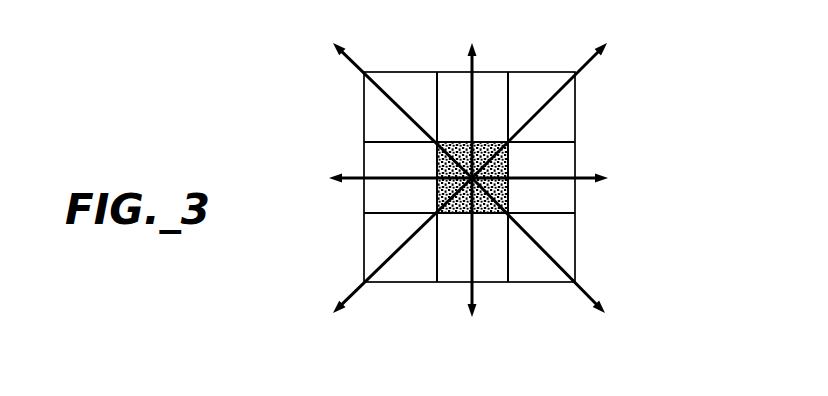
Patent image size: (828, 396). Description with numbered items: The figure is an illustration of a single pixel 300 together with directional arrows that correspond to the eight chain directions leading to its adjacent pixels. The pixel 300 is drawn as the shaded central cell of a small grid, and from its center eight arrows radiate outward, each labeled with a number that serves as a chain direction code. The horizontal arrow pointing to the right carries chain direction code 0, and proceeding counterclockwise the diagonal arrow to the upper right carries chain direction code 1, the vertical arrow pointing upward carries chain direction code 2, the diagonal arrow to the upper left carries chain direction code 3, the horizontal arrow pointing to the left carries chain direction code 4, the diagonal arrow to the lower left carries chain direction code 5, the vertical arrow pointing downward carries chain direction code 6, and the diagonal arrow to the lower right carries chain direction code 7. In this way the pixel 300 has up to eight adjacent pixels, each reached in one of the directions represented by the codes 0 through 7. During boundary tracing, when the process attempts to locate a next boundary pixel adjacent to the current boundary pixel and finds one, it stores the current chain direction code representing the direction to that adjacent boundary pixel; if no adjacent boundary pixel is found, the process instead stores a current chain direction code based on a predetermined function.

The pixel 300 is at (671, 121).
The chain direction code 0 is at (550, 178).
The chain direction code 1 is at (548, 99).
The chain direction code 2 is at (472, 97).
The chain direction code 3 is at (393, 98).
The chain direction code 4 is at (391, 178).
The chain direction code 5 is at (393, 259).
The chain direction code 6 is at (472, 260).
The chain direction code 7 is at (548, 259).